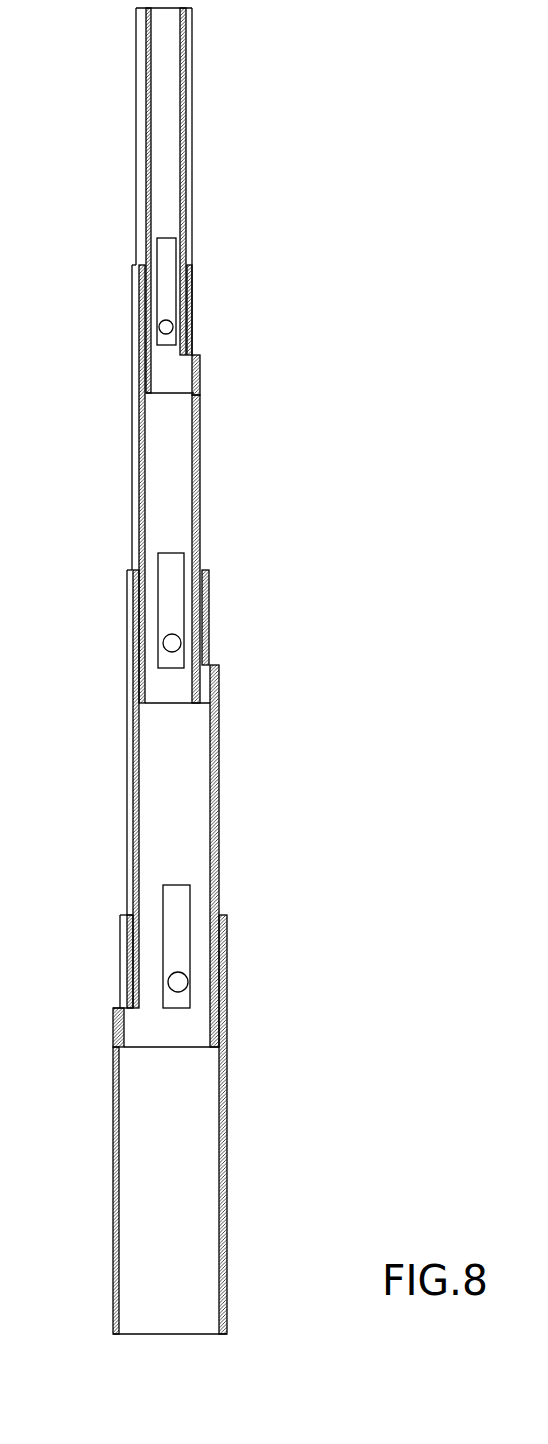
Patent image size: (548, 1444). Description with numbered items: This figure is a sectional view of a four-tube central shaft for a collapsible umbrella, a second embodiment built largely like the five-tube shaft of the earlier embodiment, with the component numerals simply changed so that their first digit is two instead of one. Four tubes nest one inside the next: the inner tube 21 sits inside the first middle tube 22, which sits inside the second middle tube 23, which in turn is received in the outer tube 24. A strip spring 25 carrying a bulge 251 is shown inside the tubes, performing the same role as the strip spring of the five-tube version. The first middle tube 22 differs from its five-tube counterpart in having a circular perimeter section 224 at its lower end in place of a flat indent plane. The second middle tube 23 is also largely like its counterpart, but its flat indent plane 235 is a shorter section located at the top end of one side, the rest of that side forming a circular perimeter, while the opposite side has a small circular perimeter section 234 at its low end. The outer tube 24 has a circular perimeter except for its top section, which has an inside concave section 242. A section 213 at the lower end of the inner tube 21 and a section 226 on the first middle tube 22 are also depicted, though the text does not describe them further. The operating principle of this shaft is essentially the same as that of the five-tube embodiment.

The inner tube 21 is at (188, 97).
The stopper of first tube 213 is at (201, 387).
The first middle tube 22 is at (202, 500).
The slider of second tube 226 is at (192, 309).
The second middle tube 23 is at (220, 786).
The flat indent plane 235 is at (209, 632).
The circular perimeter section 224 is at (219, 697).
The outer tube 24 is at (227, 1140).
The inside concave section 242 is at (130, 963).
The circular perimeter section 234 is at (115, 1027).
The strip spring 25 is at (183, 950).
The bulge 251 is at (183, 985).